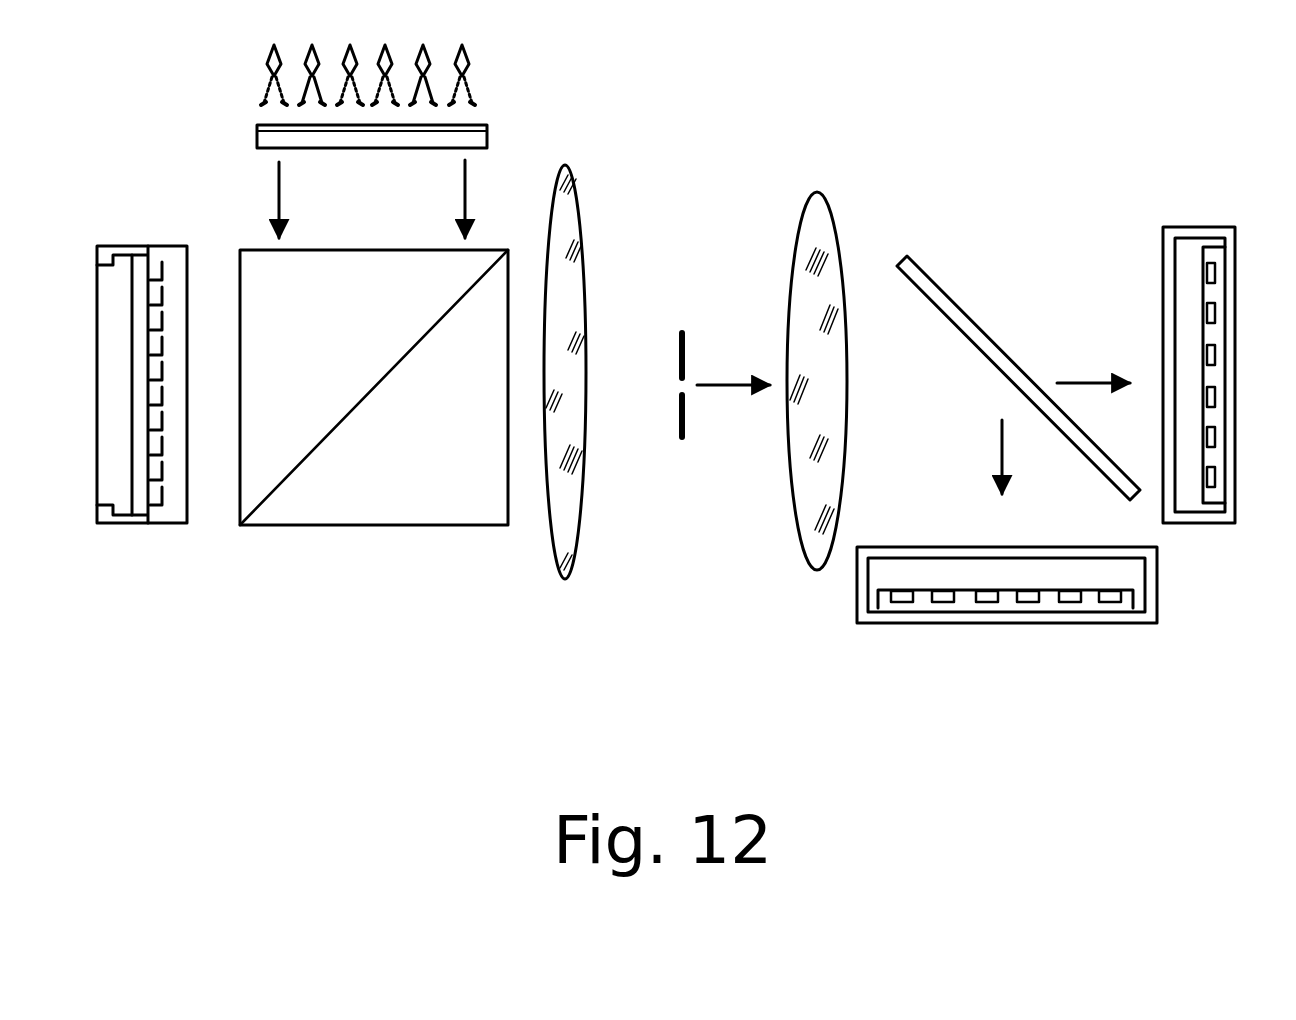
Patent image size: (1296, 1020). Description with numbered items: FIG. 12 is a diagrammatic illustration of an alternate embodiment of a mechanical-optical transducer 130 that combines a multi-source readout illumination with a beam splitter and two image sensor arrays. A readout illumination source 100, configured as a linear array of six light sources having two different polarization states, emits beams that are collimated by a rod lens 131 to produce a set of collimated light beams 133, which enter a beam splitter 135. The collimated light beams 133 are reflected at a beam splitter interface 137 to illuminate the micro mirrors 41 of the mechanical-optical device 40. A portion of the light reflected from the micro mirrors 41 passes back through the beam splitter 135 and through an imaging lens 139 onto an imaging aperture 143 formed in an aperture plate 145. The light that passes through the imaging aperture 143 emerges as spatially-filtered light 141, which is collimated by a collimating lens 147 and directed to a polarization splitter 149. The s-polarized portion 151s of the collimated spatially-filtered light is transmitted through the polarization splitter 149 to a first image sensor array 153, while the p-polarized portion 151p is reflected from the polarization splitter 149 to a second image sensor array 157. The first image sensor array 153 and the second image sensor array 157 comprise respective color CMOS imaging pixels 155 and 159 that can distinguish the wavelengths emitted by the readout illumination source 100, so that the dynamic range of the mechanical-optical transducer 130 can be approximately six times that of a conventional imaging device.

The readout illumination source 100 is at (482, 70).
The rod lens 131 is at (488, 133).
The set of collimated light beams 133 is at (290, 196).
The mechanical-optical device 40 is at (165, 242).
The micro mirrors 41 is at (158, 503).
The beam splitter 135 is at (457, 527).
The beam splitter interface 137 is at (307, 460).
The imaging lens 139 is at (582, 533).
The imaging aperture 143 is at (691, 362).
The aperture plate 145 is at (685, 355).
The spatially-filtered light 141 is at (733, 387).
The collimating lens 147 is at (832, 210).
The polarization splitter 149 is at (948, 300).
The s-polarized portion 151s is at (1093, 380).
The p-polarized portion 151p is at (1000, 445).
The first image sensor array 153 is at (1207, 225).
The color CMOS imaging pixels 155 is at (1213, 433).
The second image sensor array 157 is at (962, 625).
The color CMOS imaging pixels 159 is at (1070, 600).
The mechanical-optical transducer 130 is at (372, 713).